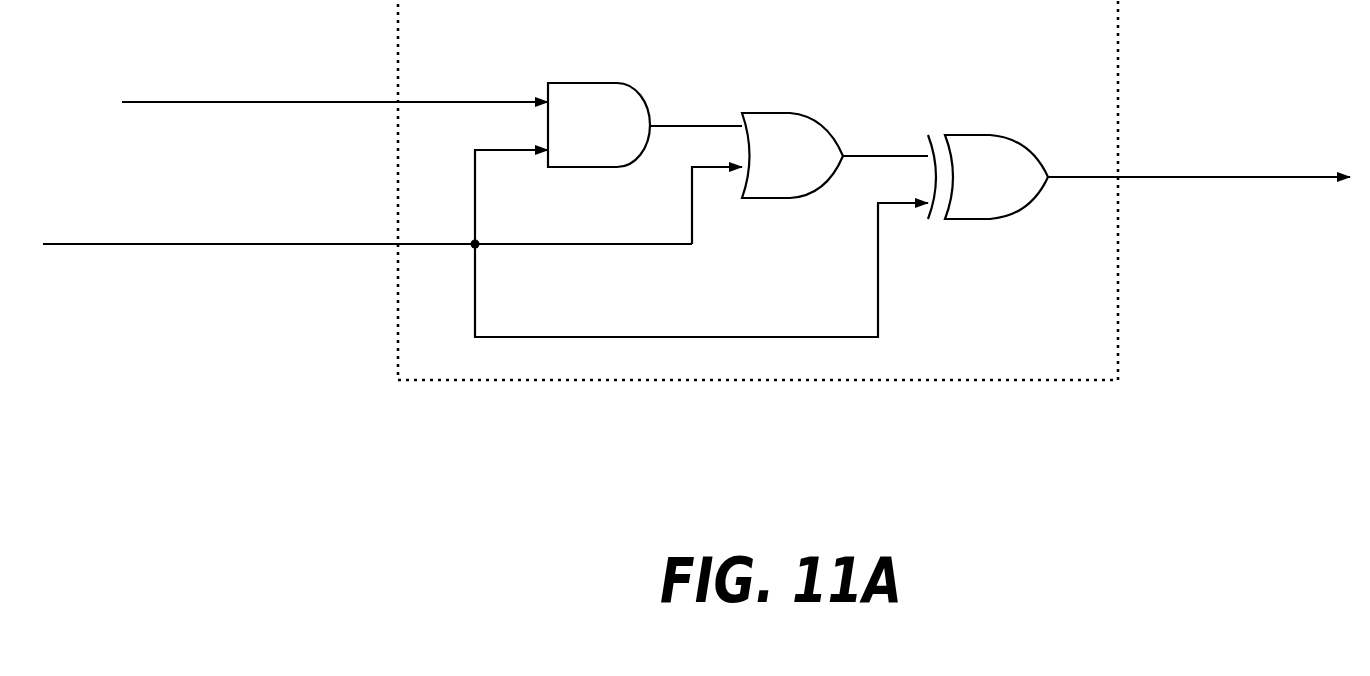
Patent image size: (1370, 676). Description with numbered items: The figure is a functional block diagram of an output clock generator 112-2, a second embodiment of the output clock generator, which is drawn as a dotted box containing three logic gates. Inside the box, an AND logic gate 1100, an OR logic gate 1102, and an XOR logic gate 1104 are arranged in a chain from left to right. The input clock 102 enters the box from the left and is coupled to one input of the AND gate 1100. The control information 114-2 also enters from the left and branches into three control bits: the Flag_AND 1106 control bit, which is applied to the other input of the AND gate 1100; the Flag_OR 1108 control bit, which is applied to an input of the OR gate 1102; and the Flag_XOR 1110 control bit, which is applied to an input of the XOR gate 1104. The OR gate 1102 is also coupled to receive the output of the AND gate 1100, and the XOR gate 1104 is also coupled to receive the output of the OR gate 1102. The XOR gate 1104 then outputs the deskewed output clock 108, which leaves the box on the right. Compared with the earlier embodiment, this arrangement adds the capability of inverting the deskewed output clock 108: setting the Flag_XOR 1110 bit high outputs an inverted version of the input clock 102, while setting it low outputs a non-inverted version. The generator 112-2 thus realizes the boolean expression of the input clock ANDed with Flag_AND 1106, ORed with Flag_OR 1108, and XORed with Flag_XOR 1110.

The input clock 102 is at (361, 74).
The control information 114-2 is at (292, 216).
The output clock generator 112-2 is at (460, 383).
The AND logic gate 1100 is at (594, 81).
The OR logic gate 1102 is at (776, 111).
The XOR logic gate 1104 is at (981, 133).
The Flag_AND control bit 1106 is at (494, 152).
The Flag_OR control bit 1108 is at (661, 248).
The Flag_XOR control bit 1110 is at (879, 255).
The deskewed output clock 108 is at (1233, 210).